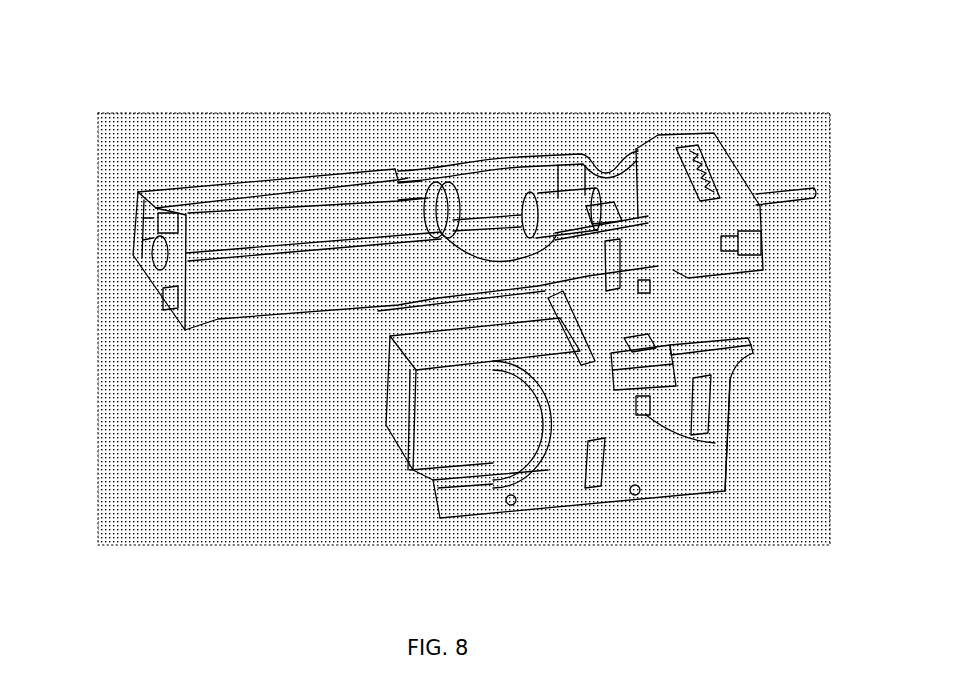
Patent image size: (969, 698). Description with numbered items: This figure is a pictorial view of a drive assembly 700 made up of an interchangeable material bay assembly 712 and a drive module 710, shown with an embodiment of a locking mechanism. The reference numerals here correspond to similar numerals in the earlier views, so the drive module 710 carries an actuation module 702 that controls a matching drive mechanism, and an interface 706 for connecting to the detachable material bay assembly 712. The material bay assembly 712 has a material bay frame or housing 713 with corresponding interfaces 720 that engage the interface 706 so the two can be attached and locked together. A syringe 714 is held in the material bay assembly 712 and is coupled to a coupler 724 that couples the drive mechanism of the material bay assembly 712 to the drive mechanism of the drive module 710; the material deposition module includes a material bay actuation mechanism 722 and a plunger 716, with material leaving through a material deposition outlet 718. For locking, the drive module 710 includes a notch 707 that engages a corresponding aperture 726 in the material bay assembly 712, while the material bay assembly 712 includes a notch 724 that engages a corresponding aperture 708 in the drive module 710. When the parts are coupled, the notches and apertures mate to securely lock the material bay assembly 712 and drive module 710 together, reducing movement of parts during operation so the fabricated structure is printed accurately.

The drive assembly 700 is at (748, 58).
The actuation module 702 is at (512, 414).
The interface 706 is at (703, 380).
The notch 707 is at (666, 340).
The aperture 708 is at (723, 445).
The drive module 710 is at (472, 491).
The interchangeable material bay assembly 712 is at (105, 247).
The material bay frame or housing 713 is at (383, 286).
The syringe 714 is at (352, 216).
The plunger 716 is at (780, 142).
The material deposition outlet 718 is at (106, 261).
The interface 720 is at (662, 289).
The material bay actuation mechanism 722 is at (693, 130).
The coupler 724 is at (559, 194).
The aperture 726 is at (672, 297).